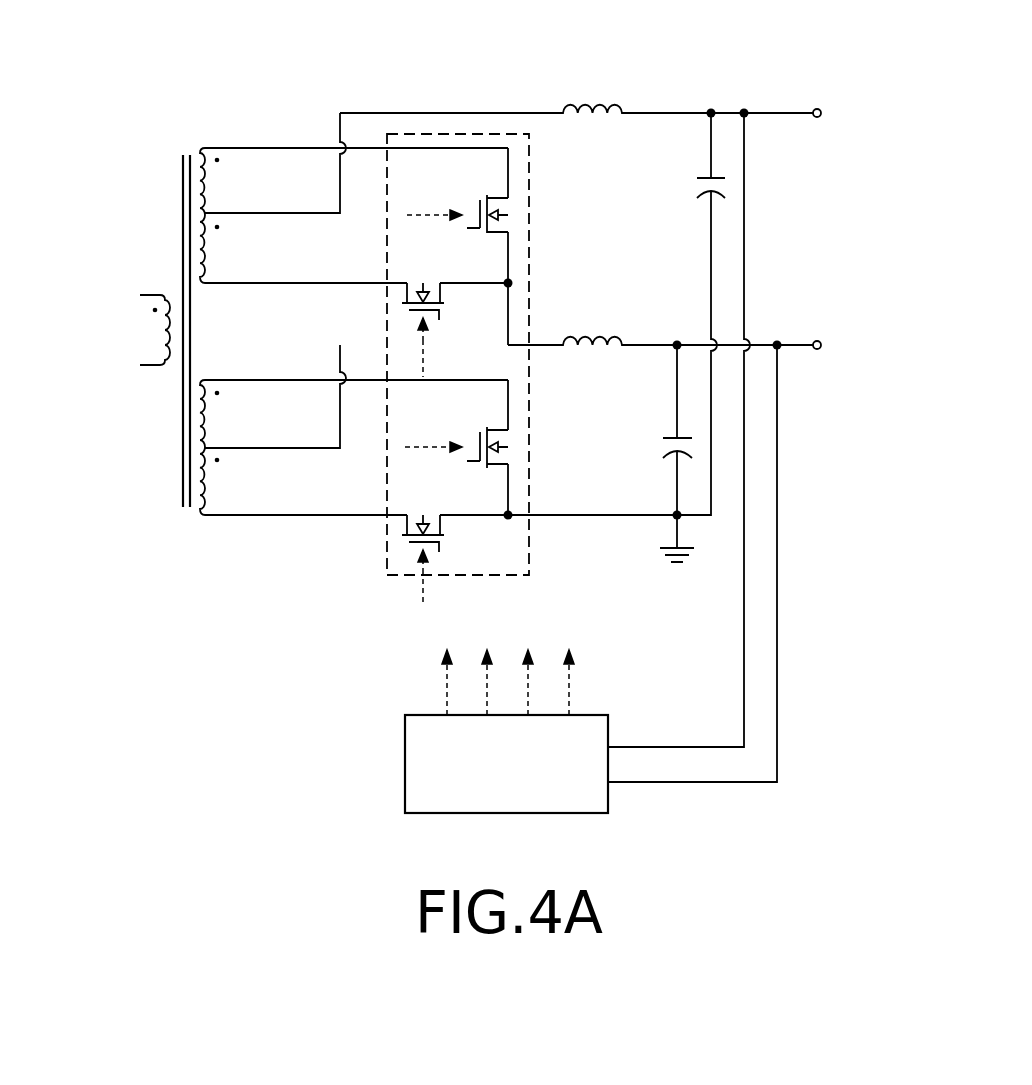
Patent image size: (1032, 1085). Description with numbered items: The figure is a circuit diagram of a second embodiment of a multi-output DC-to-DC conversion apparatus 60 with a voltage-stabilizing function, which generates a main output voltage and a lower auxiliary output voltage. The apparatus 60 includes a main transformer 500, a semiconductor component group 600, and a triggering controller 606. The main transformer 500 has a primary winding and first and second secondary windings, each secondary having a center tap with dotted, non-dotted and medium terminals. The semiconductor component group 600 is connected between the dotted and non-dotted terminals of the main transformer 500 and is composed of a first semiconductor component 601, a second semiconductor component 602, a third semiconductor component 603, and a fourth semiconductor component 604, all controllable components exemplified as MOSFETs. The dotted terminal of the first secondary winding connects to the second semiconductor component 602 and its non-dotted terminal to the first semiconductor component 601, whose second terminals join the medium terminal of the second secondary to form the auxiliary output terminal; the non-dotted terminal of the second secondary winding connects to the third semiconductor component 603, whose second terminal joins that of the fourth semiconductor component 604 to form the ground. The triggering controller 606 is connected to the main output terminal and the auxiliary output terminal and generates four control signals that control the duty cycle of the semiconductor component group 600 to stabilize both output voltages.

The multi-output DC-to-DC conversion apparatus 60 is at (525, 40).
The main transformer 500 is at (175, 283).
The semiconductor component group 600 is at (457, 133).
The first semiconductor component 601 is at (404, 310).
The second semiconductor component 602 is at (508, 208).
The third semiconductor component 603 is at (403, 542).
The fourth semiconductor component 604 is at (508, 440).
The triggering controller 606 is at (412, 766).